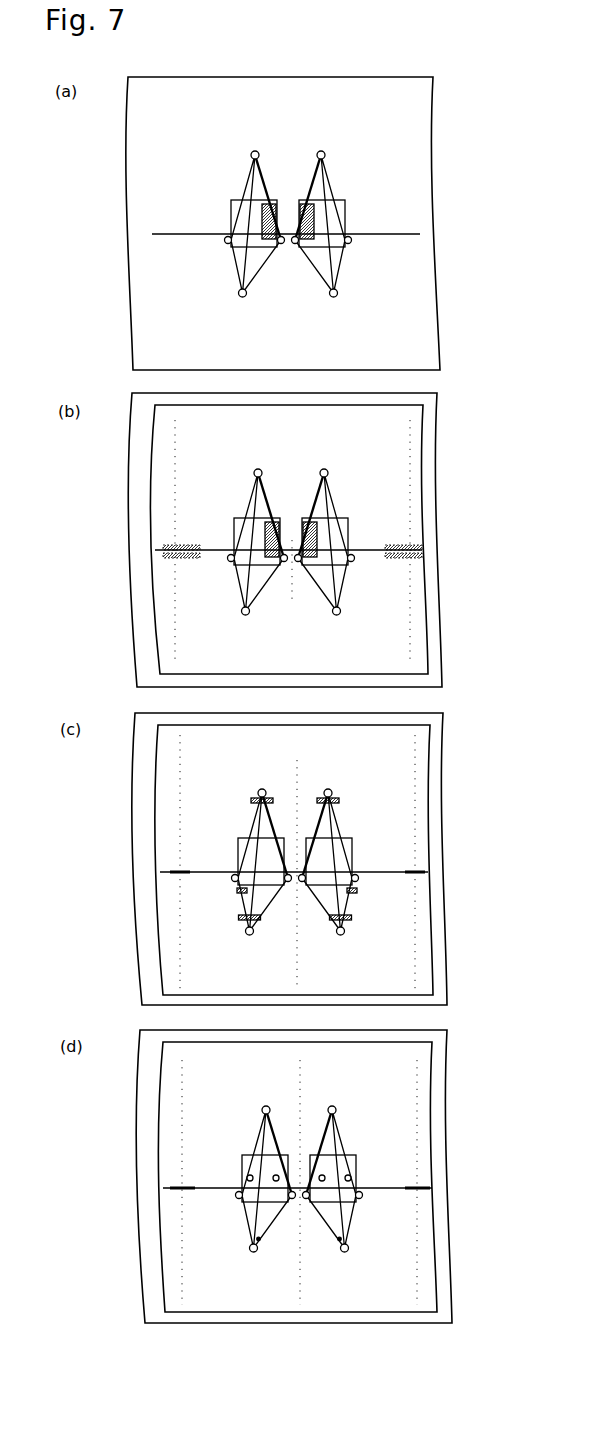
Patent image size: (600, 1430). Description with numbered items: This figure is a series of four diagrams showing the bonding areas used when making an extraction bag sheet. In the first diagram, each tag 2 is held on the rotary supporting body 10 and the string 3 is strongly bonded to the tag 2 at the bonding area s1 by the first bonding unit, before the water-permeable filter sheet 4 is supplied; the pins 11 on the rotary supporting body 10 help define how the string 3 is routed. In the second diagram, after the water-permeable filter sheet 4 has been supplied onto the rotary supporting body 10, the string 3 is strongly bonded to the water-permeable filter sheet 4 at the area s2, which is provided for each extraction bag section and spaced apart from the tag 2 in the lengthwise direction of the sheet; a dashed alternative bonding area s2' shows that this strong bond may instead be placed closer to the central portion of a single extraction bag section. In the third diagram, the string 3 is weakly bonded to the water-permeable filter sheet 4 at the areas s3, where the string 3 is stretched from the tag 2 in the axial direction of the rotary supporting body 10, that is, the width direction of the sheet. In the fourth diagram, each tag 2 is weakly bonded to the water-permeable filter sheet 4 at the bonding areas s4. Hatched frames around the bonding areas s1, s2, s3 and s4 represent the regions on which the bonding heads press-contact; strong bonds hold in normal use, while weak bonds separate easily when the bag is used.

The tag 2 is at (240, 206).
The string 3 is at (267, 186).
The water-permeable filter sheet 4 is at (420, 636).
The rotary supporting body 10 is at (428, 362).
The pins 11 is at (349, 245).
The bonding area s1 is at (271, 245).
The area s2 is at (296, 843).
The bonding area s2' is at (196, 580).
The areas s3 is at (255, 930).
The bonding areas s4 is at (276, 1183).